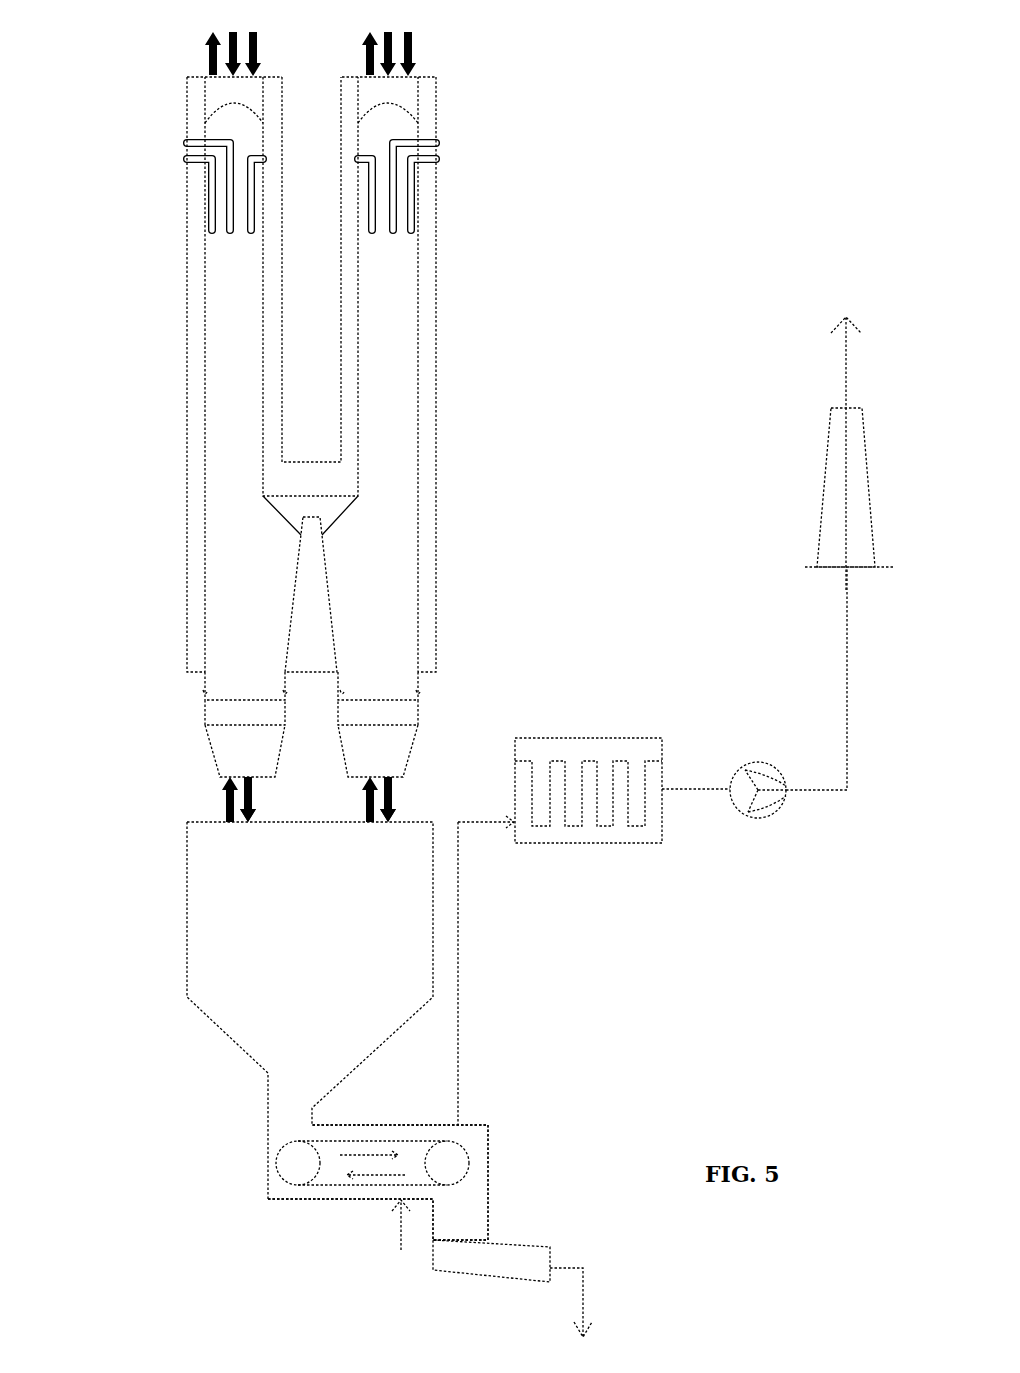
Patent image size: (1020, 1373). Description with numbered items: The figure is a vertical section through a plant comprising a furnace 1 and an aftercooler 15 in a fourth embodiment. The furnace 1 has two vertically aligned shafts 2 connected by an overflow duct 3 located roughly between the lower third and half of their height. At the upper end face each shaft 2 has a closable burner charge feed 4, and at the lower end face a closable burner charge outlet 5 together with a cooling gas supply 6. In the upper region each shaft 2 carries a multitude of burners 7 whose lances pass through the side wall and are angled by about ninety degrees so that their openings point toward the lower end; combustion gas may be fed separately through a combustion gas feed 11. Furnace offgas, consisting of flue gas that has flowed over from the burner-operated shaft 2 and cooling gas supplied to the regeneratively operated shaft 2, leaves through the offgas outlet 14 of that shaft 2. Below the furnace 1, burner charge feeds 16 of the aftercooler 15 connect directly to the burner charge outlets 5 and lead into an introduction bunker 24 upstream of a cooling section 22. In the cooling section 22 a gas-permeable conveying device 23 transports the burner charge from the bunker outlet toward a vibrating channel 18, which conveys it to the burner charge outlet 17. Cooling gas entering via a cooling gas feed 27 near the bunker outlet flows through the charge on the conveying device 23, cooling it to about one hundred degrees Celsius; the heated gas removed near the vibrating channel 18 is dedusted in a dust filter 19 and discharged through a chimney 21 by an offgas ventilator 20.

The furnace 1 is at (113, 100).
The shaft 2 is at (342, 74).
The overflow duct 3 is at (318, 507).
The burner charge feed 4 is at (310, 42).
The burner charge outlet 5 is at (340, 799).
The cooling gas supply 6 is at (290, 799).
The burner 7 is at (247, 172).
The combustion gas feed 11 is at (338, 42).
The offgas outlet 14 is at (284, 41).
The aftercooler 15 is at (316, 1199).
The burner charge feed of the aftercooler 16 is at (318, 799).
The burner charge outlet of the aftercooler 17 is at (591, 1302).
The vibrating channel 18 is at (468, 1273).
The dust filter 19 is at (588, 774).
The offgas ventilator 20 is at (754, 692).
The chimney 21 is at (840, 453).
The cooling section 22 is at (378, 1182).
The conveying device 23 is at (458, 1140).
The introduction bunker 24 is at (184, 944).
The cooling gas feed 27 is at (390, 1227).